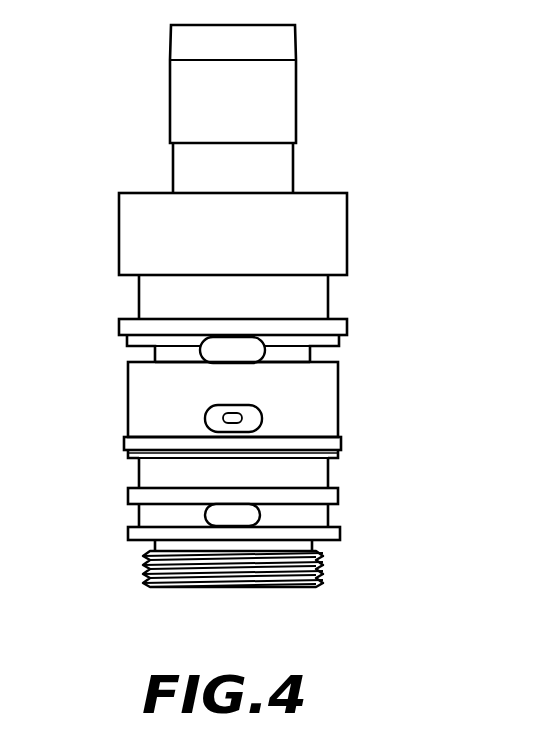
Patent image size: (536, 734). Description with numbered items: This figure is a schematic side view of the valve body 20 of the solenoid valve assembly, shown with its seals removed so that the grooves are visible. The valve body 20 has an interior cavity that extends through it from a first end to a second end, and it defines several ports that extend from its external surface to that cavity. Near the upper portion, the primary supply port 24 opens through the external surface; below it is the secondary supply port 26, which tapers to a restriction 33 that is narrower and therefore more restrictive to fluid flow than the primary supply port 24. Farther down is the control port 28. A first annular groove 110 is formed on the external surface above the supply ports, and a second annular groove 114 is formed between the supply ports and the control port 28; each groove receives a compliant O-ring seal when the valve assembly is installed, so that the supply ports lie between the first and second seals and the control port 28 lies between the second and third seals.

The valve body 20 is at (347, 236).
The first annular groove 110 is at (330, 299).
The primary supply port 24 is at (250, 349).
The secondary supply port 26 is at (214, 419).
The restriction 33 is at (241, 418).
The second annular groove 114 is at (330, 475).
The control port 28 is at (245, 515).